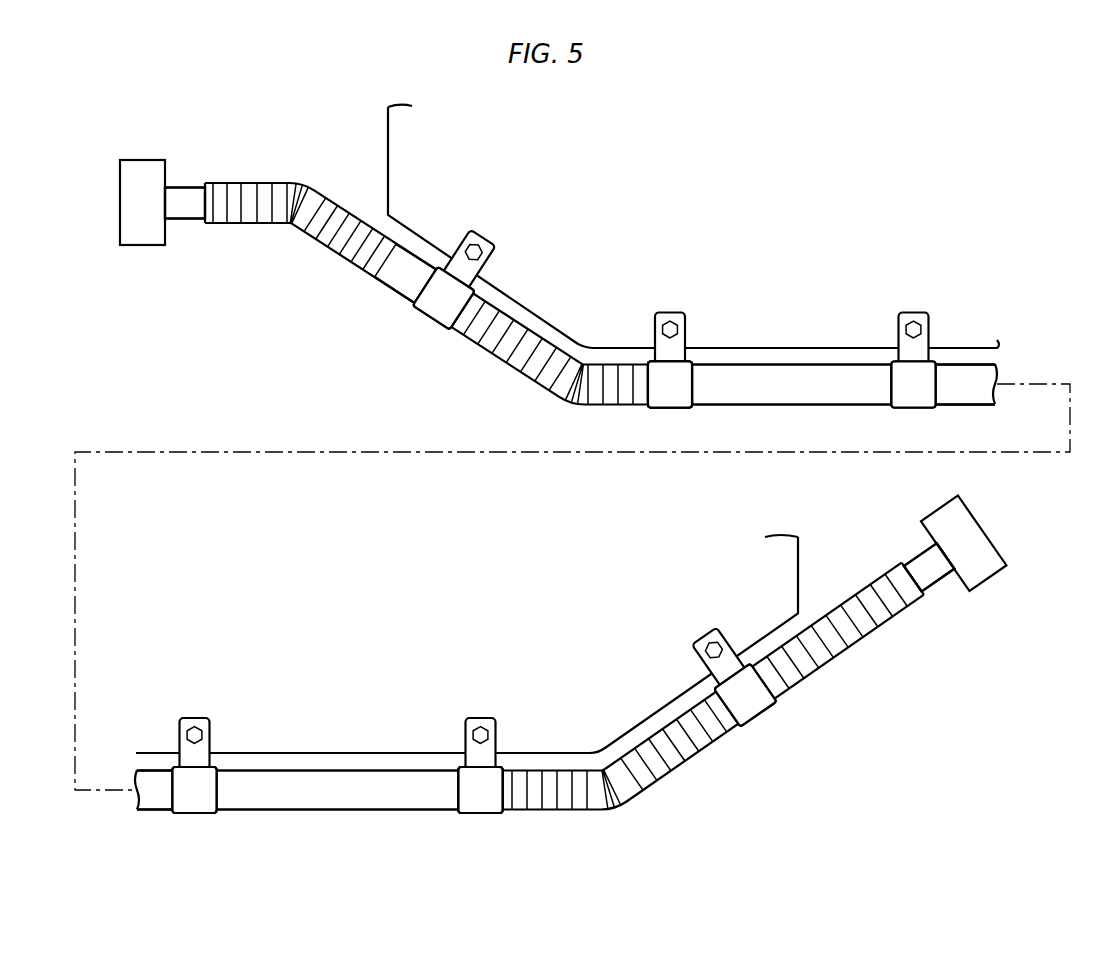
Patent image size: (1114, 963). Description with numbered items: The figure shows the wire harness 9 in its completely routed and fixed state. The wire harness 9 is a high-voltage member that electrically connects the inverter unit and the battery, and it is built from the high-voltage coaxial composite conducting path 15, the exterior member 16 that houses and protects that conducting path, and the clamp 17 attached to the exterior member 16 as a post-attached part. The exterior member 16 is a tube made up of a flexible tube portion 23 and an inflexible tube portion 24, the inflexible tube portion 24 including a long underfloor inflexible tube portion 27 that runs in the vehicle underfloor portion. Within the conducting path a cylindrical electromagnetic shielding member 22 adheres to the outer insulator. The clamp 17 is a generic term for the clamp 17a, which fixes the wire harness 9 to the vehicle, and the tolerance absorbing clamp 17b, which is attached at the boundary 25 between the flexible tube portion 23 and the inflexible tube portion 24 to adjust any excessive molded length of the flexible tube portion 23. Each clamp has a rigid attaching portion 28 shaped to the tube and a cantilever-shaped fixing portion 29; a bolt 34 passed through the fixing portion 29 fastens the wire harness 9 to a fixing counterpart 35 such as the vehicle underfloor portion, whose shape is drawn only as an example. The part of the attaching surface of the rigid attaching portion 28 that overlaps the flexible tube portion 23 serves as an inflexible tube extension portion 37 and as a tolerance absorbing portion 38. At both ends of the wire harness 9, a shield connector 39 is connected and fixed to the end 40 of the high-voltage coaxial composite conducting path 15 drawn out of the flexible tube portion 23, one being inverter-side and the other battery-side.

The wire harness 9 is at (280, 300).
The high-voltage coaxial composite conducting path 15 is at (180, 198).
The end of the high-voltage coaxial composite conducting path 40 is at (559, 390).
The exterior member 16 is at (525, 382).
The clamp 17 is at (554, 540).
The clamp 17a is at (605, 213).
The tolerance absorbing clamp 17b is at (797, 273).
The electromagnetic shielding member 22 is at (593, 810).
The flexible tube portion 23 is at (297, 180).
The inflexible tube portion 24 is at (387, 284).
The boundary 25 is at (660, 392).
The underfloor inflexible tube portion 27 is at (962, 395).
The rigid attaching portion 28 is at (450, 298).
The fixing portion 29 is at (470, 270).
The bolt 34 is at (468, 242).
The fixing counterpart 35 is at (387, 143).
The inflexible tube extension portion 37 is at (657, 410).
The tolerance absorbing portion 38 is at (576, 588).
The shield connector 39 is at (135, 215).